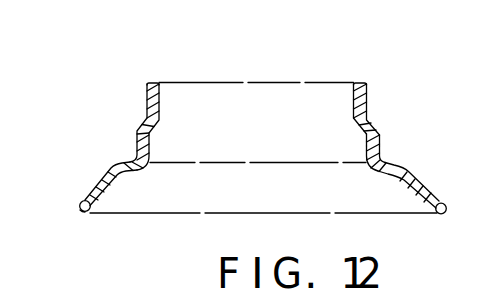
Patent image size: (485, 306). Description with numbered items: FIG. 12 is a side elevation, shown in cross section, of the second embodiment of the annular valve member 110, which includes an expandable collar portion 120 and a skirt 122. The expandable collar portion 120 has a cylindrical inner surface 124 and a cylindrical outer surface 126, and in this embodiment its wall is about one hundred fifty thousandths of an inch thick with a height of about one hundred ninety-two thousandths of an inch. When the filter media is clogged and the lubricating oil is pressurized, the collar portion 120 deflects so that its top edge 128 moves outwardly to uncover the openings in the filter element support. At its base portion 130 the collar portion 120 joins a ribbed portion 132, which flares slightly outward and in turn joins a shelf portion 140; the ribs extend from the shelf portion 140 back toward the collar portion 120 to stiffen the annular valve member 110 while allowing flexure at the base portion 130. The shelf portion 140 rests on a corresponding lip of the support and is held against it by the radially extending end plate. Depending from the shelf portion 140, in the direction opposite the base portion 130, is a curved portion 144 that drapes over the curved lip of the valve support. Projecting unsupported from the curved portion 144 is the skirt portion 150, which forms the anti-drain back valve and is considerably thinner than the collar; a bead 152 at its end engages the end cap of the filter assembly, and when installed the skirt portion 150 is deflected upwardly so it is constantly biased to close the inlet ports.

The annular valve member 110 is at (305, 79).
The expandable collar portion 120 is at (232, 96).
The skirt 122 is at (110, 173).
The cylindrical inner surface 124 is at (317, 140).
The cylindrical outer surface 126 is at (372, 97).
The top edge 128 is at (357, 81).
The base portion 130 is at (147, 108).
The ribbed portion 132 is at (385, 138).
The shelf portion 140 is at (383, 155).
The curved portion 144 is at (127, 160).
The skirt portion 150 is at (78, 205).
The bead 152 is at (80, 212).